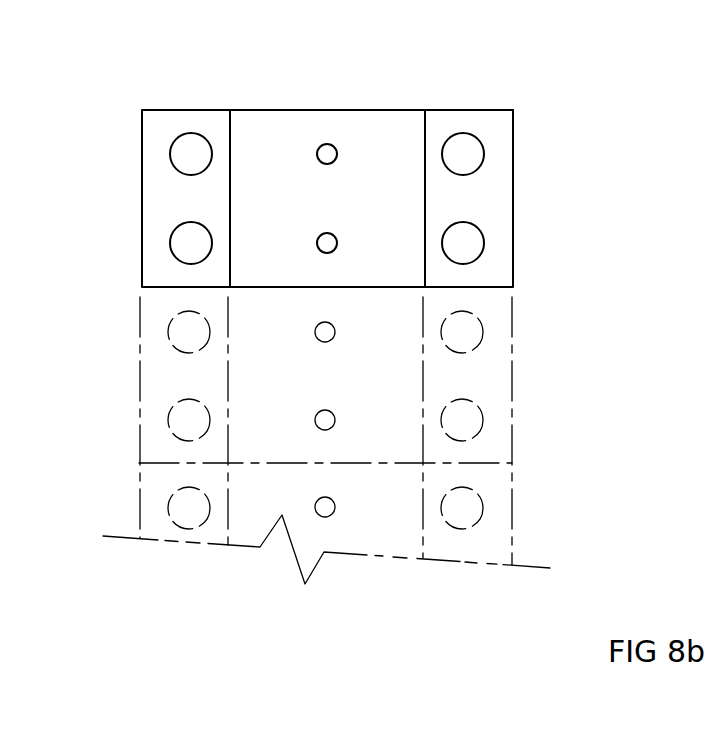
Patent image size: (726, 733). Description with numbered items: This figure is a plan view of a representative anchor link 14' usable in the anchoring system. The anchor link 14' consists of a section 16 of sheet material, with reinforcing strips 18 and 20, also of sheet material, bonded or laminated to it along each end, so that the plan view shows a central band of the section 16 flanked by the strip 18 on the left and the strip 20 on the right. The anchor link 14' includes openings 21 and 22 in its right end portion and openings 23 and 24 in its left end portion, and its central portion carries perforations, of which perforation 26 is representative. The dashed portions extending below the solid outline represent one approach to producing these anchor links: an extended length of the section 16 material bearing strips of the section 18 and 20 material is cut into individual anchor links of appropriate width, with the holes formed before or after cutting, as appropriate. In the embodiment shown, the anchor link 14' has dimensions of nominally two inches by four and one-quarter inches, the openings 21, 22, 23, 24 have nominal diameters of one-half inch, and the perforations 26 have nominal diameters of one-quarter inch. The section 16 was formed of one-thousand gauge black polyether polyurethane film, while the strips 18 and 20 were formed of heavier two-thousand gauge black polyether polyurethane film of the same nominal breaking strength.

The anchor link 14' is at (387, 347).
The section of sheet material 16 is at (288, 110).
The reinforcing strip 18 is at (166, 123).
The reinforcing strip 20 is at (484, 122).
The opening 21 is at (483, 147).
The opening 22 is at (482, 250).
The opening 23 is at (172, 148).
The opening 24 is at (172, 232).
The perforation 26 is at (333, 143).